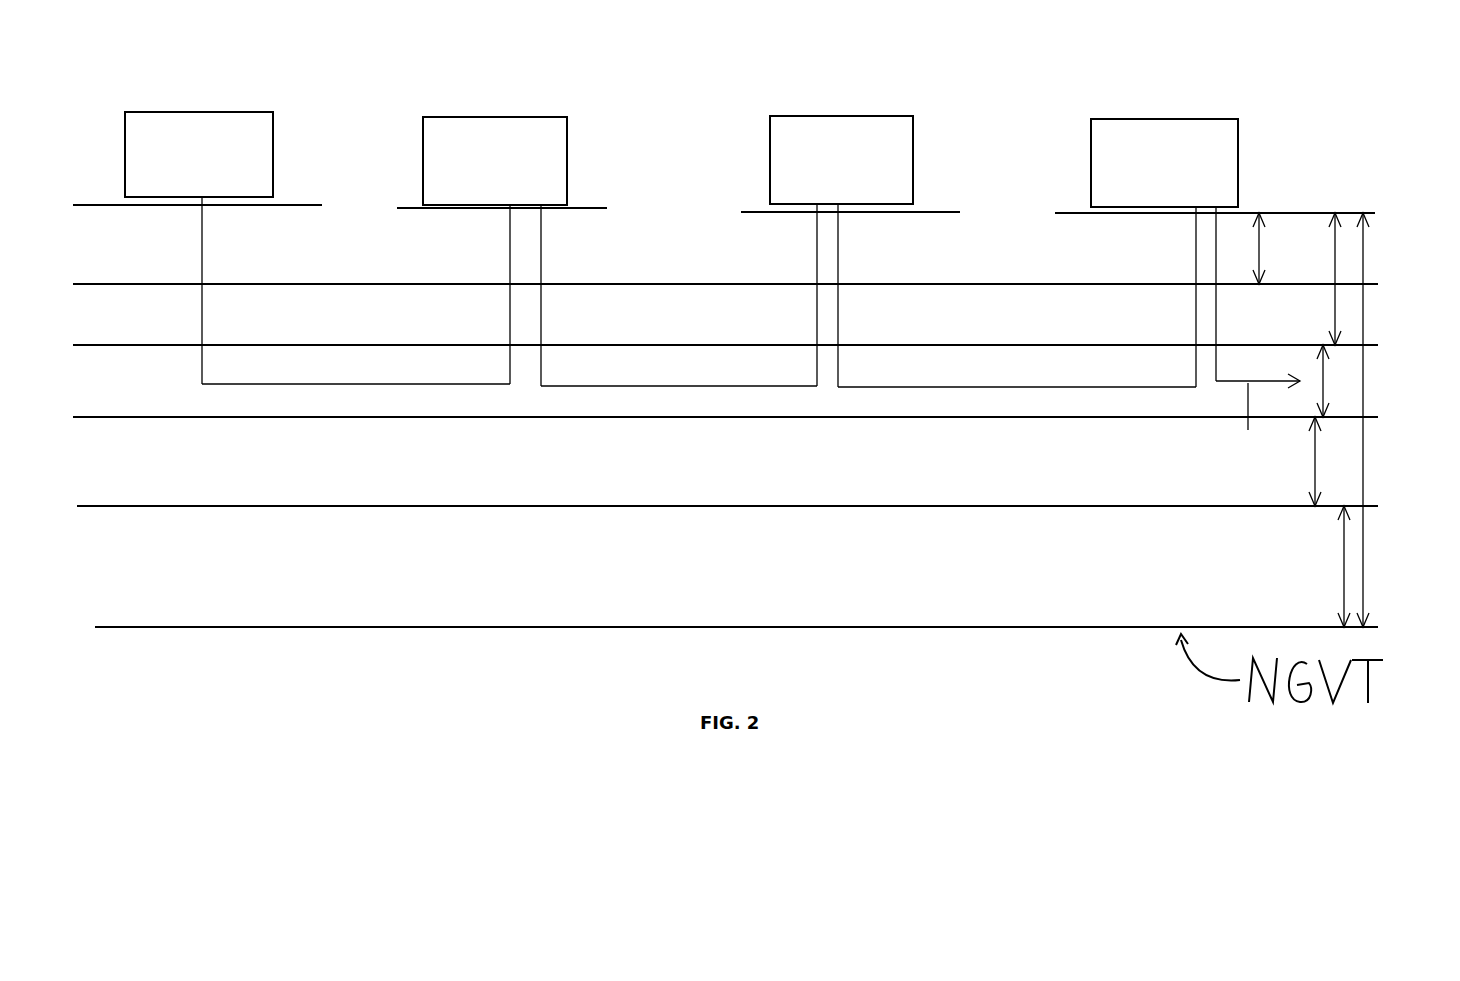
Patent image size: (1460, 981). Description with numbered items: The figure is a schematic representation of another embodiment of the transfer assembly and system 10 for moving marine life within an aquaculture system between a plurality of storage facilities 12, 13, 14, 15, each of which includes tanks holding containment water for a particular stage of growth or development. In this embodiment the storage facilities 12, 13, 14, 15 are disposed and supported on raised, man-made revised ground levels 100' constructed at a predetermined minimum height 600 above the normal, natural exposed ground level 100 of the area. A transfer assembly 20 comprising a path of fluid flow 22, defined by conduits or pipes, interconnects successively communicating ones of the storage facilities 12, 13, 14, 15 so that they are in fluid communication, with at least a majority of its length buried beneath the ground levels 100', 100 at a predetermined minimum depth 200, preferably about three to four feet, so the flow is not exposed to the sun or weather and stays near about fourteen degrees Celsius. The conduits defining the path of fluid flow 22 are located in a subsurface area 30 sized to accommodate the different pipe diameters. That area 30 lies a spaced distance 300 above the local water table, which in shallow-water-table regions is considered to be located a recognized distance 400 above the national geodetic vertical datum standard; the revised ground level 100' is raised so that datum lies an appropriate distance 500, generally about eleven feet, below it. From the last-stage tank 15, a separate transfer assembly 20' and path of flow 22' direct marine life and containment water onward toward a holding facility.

The transfer assembly and system 10 is at (700, 68).
The storage facility 12 is at (235, 112).
The storage facility 13 is at (478, 117).
The storage facility 14 is at (831, 116).
The storage facility 15 is at (1161, 119).
The revised ground level 100' is at (724, 182).
The independent ground level 100 is at (725, 258).
The transfer assembly 20 is at (602, 292).
The path of fluid flow 22 is at (699, 367).
The transfer assembly 20' is at (1178, 338).
The path of flow 22' is at (1249, 420).
The subsurface area 30 is at (1318, 360).
The predetermined minimum depth 200 is at (1334, 304).
The spaced distance 300 is at (1313, 476).
The recognized distance 400 is at (1343, 578).
The appropriate distance 500 is at (1370, 462).
The predetermined minimum height 600 is at (1260, 247).